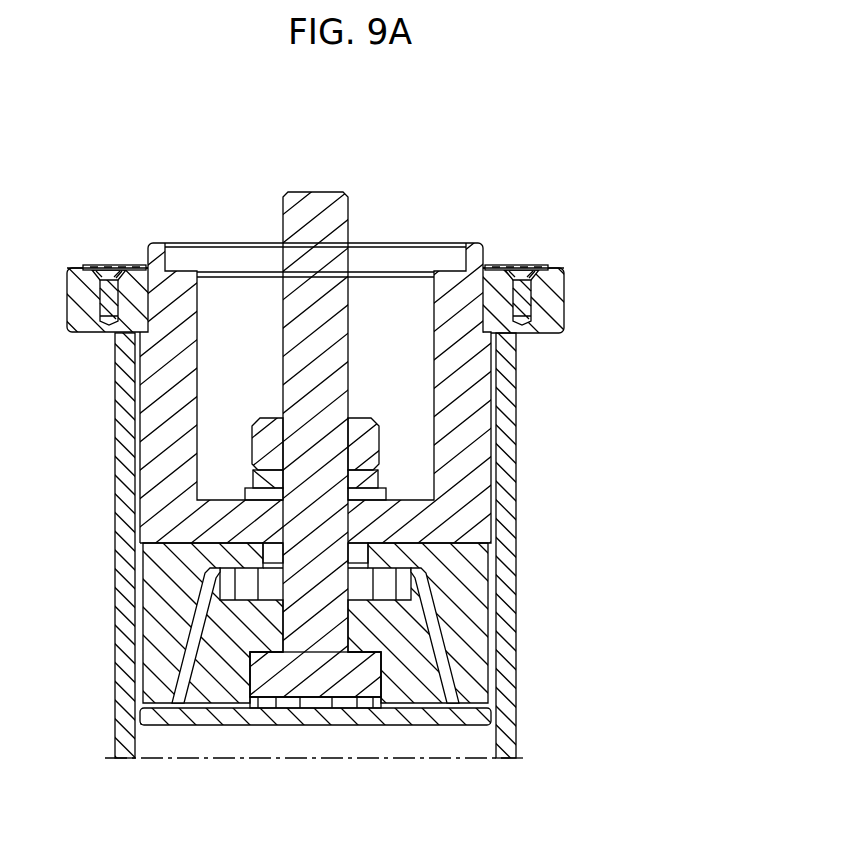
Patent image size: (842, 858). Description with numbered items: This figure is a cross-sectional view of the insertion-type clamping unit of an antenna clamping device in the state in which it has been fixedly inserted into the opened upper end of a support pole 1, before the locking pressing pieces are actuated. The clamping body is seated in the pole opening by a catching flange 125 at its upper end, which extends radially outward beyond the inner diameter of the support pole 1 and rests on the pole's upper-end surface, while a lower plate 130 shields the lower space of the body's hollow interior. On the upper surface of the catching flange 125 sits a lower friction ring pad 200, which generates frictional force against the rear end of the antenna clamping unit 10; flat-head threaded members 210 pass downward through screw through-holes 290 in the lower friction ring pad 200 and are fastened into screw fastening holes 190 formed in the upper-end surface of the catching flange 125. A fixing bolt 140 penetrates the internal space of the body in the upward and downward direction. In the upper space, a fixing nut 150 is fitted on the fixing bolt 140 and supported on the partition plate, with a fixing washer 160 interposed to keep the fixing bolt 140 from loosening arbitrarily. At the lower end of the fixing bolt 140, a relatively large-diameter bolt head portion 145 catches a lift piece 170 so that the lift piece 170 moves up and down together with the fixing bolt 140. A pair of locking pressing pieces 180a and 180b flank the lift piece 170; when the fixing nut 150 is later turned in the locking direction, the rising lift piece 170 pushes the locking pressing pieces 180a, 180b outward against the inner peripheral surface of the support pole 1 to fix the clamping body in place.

The support pole 1 is at (118, 545).
The antenna clamping unit 10 is at (153, 442).
The catching flange 125 is at (558, 322).
The lower plate 130 is at (337, 710).
The fixing bolt 140 is at (315, 195).
The bolt head portion 145 is at (297, 683).
The fixing nut 150 is at (380, 445).
The fixing washer 160 is at (372, 478).
The lift piece 170 is at (410, 690).
The locking pressing piece 180a is at (158, 633).
The locking pressing piece 180b is at (470, 637).
The screw fastening hole 190 is at (540, 284).
The lower friction ring pad 200 is at (552, 269).
The flat-head threaded member 210 is at (535, 267).
The screw through-hole 290 is at (507, 267).